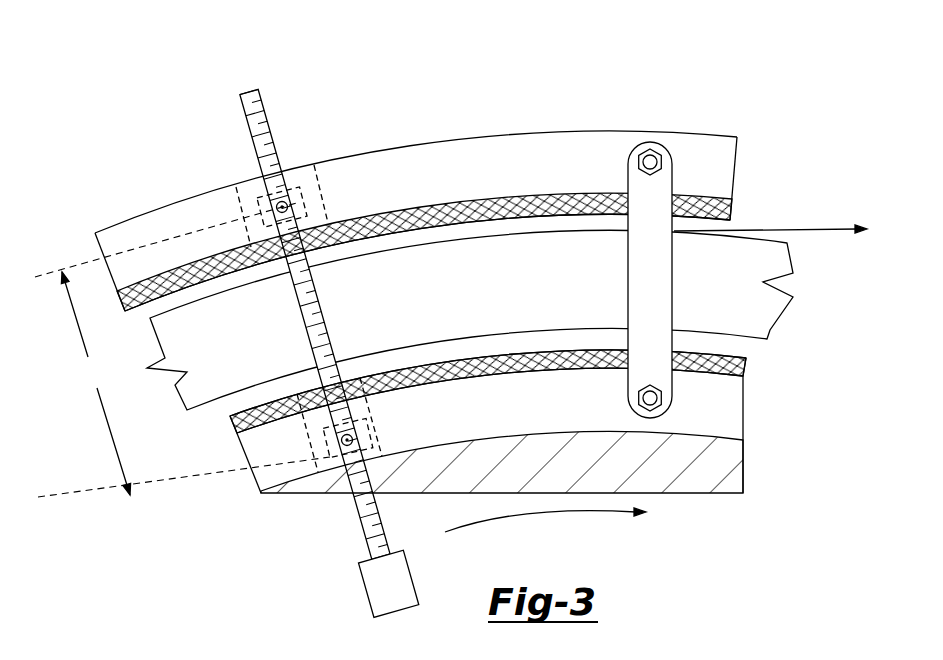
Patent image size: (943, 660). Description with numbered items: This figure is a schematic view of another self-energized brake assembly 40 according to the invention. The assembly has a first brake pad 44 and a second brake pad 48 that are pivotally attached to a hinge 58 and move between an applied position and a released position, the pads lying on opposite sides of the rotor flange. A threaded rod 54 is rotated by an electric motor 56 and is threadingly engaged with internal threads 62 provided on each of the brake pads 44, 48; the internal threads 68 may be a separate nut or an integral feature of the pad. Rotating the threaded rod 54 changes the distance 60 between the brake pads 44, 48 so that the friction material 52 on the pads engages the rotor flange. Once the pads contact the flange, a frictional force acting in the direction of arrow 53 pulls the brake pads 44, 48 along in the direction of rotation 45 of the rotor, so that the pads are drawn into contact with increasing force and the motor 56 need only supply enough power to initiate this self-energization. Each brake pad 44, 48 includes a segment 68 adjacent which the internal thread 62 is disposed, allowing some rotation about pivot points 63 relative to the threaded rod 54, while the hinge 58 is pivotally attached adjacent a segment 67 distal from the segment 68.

The self-energized brake assembly 40 is at (440, 317).
The first brake pad 44 is at (531, 147).
The direction of rotation 45 is at (590, 515).
The second brake pad 48 is at (584, 413).
The friction material 52 is at (400, 212).
The arrow 53 is at (813, 229).
The threaded rod 54 is at (263, 108).
The electric motor 56 is at (401, 603).
The hinge 58 is at (672, 298).
The distance 60 is at (182, 349).
The internal threads 62 is at (258, 195).
The pivot points 63 is at (310, 197).
The segment 67 is at (745, 158).
The segment 68 is at (90, 247).